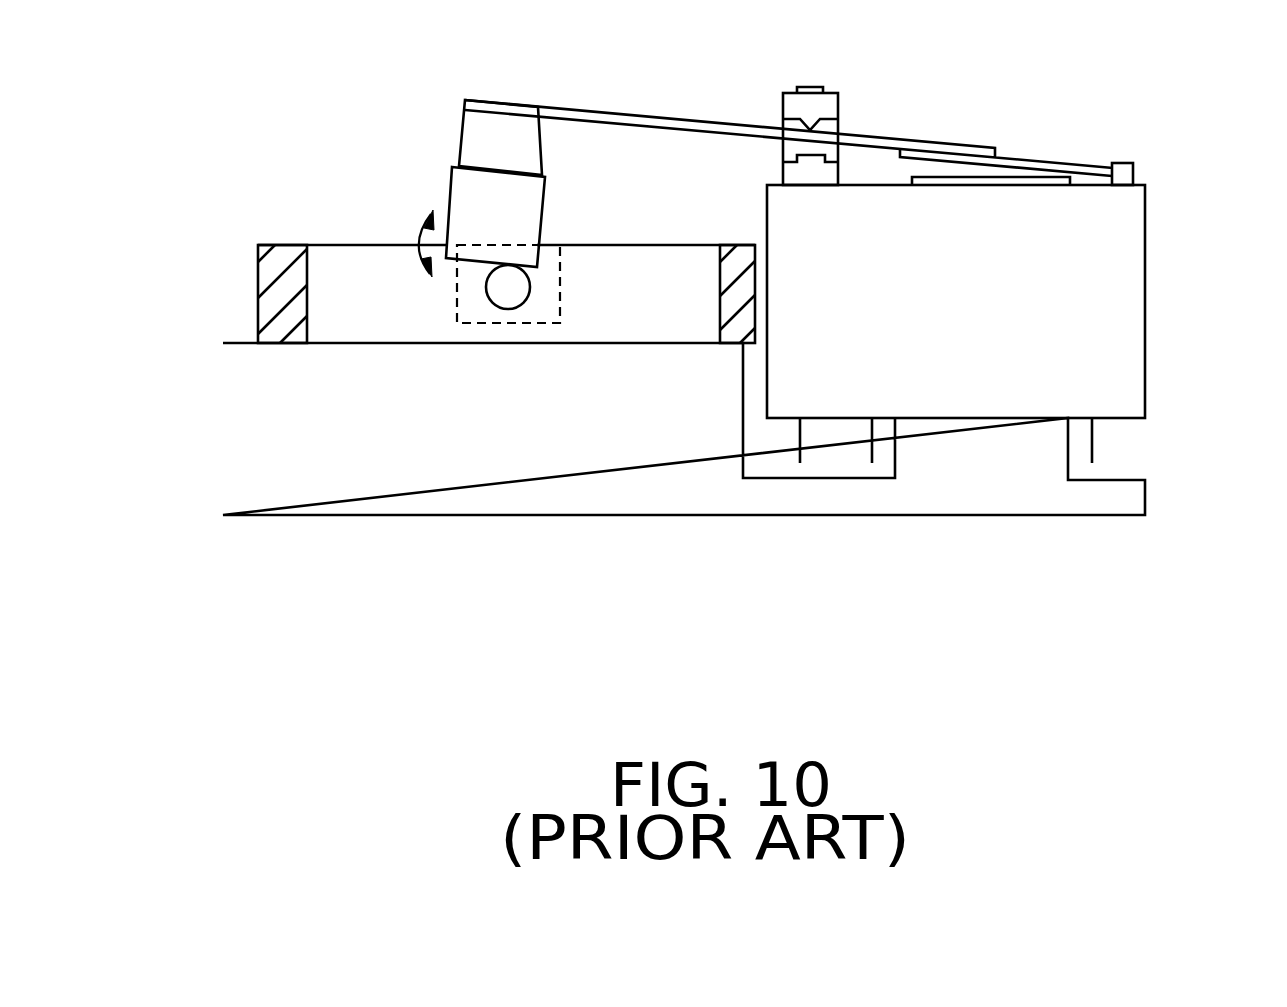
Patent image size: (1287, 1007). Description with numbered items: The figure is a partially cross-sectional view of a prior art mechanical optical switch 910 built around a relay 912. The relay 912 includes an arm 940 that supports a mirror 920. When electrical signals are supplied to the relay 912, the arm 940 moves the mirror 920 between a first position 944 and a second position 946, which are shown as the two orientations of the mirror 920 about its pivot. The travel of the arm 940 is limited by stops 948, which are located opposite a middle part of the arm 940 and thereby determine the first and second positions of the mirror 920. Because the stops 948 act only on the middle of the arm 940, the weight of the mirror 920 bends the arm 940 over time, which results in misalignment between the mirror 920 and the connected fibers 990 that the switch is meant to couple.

The mechanical optical switch 910 is at (1002, 105).
The relay 912 is at (1147, 310).
The mirror 920 is at (542, 226).
The arm 940 is at (597, 110).
The first position 944 is at (457, 280).
The second position 946 is at (452, 182).
The stops 948 is at (817, 118).
The connected fibers 990 is at (507, 287).